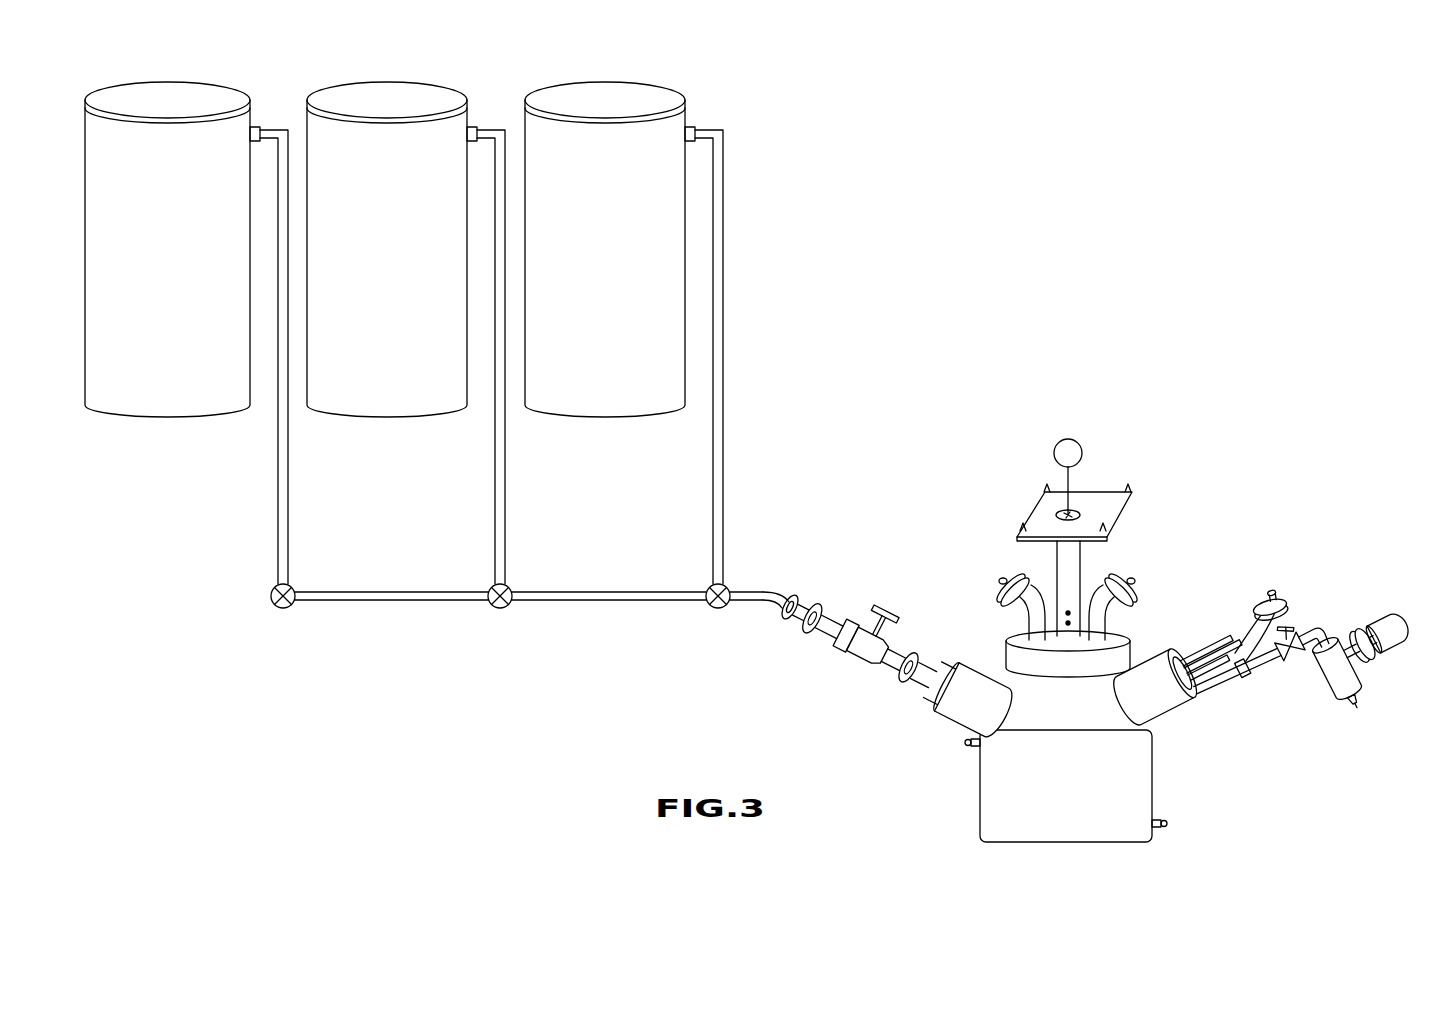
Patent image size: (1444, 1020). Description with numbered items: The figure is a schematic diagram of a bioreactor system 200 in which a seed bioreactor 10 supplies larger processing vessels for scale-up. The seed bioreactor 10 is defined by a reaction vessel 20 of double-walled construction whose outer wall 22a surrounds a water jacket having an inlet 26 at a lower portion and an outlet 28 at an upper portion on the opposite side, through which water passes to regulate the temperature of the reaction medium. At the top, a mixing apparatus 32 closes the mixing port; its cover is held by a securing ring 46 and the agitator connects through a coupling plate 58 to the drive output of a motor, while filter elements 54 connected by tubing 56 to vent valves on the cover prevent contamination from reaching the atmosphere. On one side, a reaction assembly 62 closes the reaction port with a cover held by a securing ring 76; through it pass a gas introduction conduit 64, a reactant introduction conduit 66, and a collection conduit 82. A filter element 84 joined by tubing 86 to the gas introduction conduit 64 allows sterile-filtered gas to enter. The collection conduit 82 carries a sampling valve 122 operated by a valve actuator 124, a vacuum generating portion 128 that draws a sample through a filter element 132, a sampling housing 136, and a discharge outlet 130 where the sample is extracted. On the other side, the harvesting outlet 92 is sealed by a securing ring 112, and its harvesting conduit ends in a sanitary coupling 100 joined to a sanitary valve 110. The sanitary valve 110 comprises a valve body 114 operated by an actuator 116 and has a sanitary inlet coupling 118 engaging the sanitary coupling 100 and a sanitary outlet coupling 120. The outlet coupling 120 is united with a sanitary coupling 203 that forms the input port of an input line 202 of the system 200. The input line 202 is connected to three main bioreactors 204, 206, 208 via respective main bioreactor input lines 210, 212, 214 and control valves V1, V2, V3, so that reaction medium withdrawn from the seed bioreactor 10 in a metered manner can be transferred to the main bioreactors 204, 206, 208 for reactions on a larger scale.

The bioreactor system 200 is at (471, 334).
The main bioreactor 204 is at (190, 252).
The main bioreactor 206 is at (410, 252).
The main bioreactor 208 is at (628, 252).
The main bioreactor input line 210 is at (290, 506).
The main bioreactor input line 212 is at (507, 498).
The main bioreactor input line 214 is at (724, 476).
The input line 202 is at (736, 590).
The sanitary coupling 203 is at (782, 612).
The control valve V1 is at (278, 610).
The control valve V2 is at (496, 610).
The control valve V3 is at (714, 610).
The sanitary valve 110 is at (859, 610).
The actuator 116 is at (865, 592).
The valve body 114 is at (862, 660).
The sanitary inlet coupling 118 is at (907, 652).
The sanitary outlet coupling 120 is at (812, 632).
The securing ring 112 is at (960, 662).
The sanitary coupling 100 is at (906, 690).
The harvesting outlet 92 is at (832, 675).
The seed bioreactor 10 is at (1084, 640).
The reaction vessel 20 is at (1068, 642).
The outer wall 22a is at (1154, 780).
The inlet 26 is at (1165, 820).
The outlet 28 is at (968, 746).
The mixing apparatus 32 is at (1119, 537).
The coupling plate 58 is at (1100, 497).
The securing ring 46 is at (1129, 658).
The filter element 54 is at (1005, 586).
The tubing 56 is at (1034, 602).
The reaction assembly 62 is at (1263, 677).
The securing ring 76 is at (1200, 704).
The gas introduction conduit 64 is at (1206, 660).
The reactant introduction conduit 66 is at (1237, 650).
The collection conduit 82 is at (1242, 676).
The tubing 86 is at (1258, 628).
The filter element 84 is at (1267, 598).
The valve actuator 124 is at (1290, 636).
The sampling valve 122 is at (1303, 633).
The sampling housing 136 is at (1325, 679).
The discharge outlet 130 is at (1357, 699).
The filter element 132 is at (1378, 650).
The vacuum generating portion 128 is at (1389, 620).